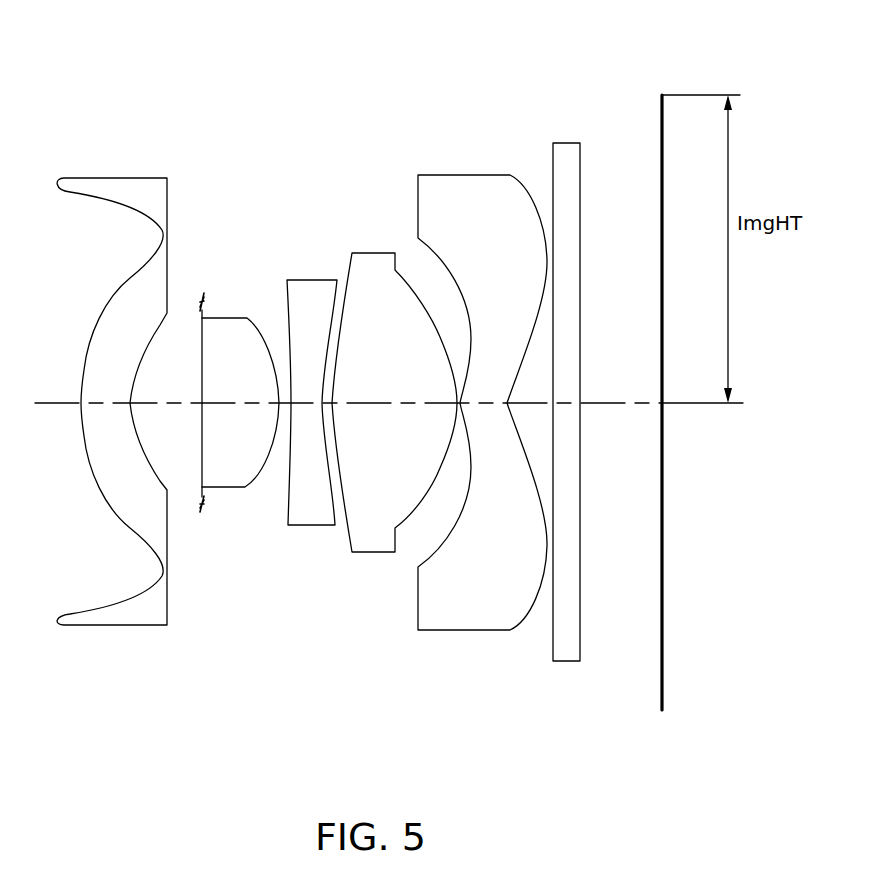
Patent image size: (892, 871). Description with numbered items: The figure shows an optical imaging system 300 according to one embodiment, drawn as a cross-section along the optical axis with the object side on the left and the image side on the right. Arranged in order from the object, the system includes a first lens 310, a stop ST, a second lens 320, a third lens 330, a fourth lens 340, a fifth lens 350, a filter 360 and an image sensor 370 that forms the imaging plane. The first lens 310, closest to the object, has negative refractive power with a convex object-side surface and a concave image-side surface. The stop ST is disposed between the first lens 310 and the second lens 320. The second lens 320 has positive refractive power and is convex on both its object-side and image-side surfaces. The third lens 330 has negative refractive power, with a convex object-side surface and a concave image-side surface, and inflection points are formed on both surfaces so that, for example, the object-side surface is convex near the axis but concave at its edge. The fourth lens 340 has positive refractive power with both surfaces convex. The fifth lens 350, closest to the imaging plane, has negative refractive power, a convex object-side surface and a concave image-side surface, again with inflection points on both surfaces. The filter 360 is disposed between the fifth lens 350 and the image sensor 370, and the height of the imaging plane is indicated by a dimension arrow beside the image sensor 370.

The optical imaging system 300 is at (338, 143).
The first lens 310 is at (123, 625).
The stop ST is at (201, 293).
The second lens 320 is at (225, 487).
The third lens 330 is at (307, 525).
The fourth lens 340 is at (375, 552).
The fifth lens 350 is at (463, 630).
The filter 360 is at (566, 661).
The image sensor 370 is at (660, 710).